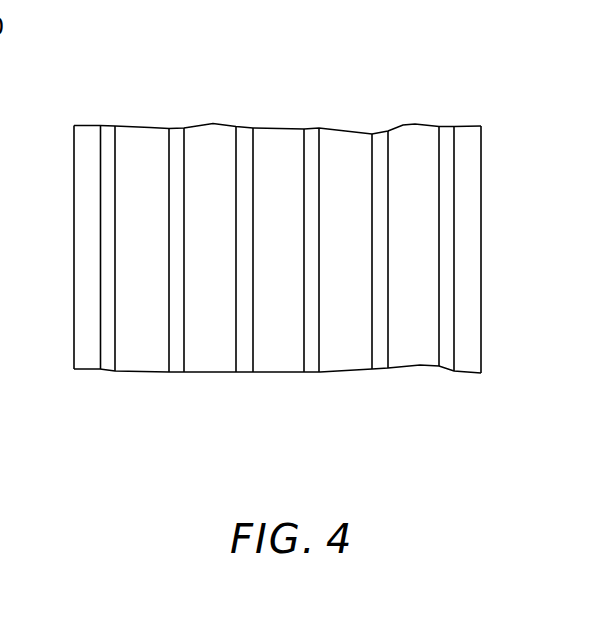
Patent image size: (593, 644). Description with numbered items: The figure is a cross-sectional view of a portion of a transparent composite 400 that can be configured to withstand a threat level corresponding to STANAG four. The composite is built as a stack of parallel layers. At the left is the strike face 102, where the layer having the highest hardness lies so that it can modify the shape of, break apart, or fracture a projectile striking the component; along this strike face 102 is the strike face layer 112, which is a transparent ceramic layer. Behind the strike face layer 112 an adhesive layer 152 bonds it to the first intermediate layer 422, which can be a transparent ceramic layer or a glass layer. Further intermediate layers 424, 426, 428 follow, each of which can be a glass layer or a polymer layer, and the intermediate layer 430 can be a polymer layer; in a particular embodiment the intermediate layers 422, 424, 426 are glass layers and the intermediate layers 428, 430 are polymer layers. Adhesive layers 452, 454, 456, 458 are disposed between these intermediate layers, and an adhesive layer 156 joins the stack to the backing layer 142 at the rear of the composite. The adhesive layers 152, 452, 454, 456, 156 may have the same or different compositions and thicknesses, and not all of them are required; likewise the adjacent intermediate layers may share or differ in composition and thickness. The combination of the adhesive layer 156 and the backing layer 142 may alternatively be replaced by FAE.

The transparent composite 400 is at (252, 249).
The strike face 102 is at (244, 304).
The strike face layer 112 is at (85, 186).
The backing layer 142 is at (470, 360).
The adhesive layer 152 is at (108, 360).
The adhesive layer 156 is at (450, 360).
The intermediate layer 422 is at (152, 227).
The intermediate layer 424 is at (220, 227).
The intermediate layer 426 is at (289, 227).
The intermediate layer 428 is at (356, 227).
The intermediate layer 430 is at (424, 227).
The adhesive layer 452 is at (178, 360).
The adhesive layer 454 is at (243, 360).
The adhesive layer 456 is at (310, 360).
The adhesive layer 458 is at (379, 360).